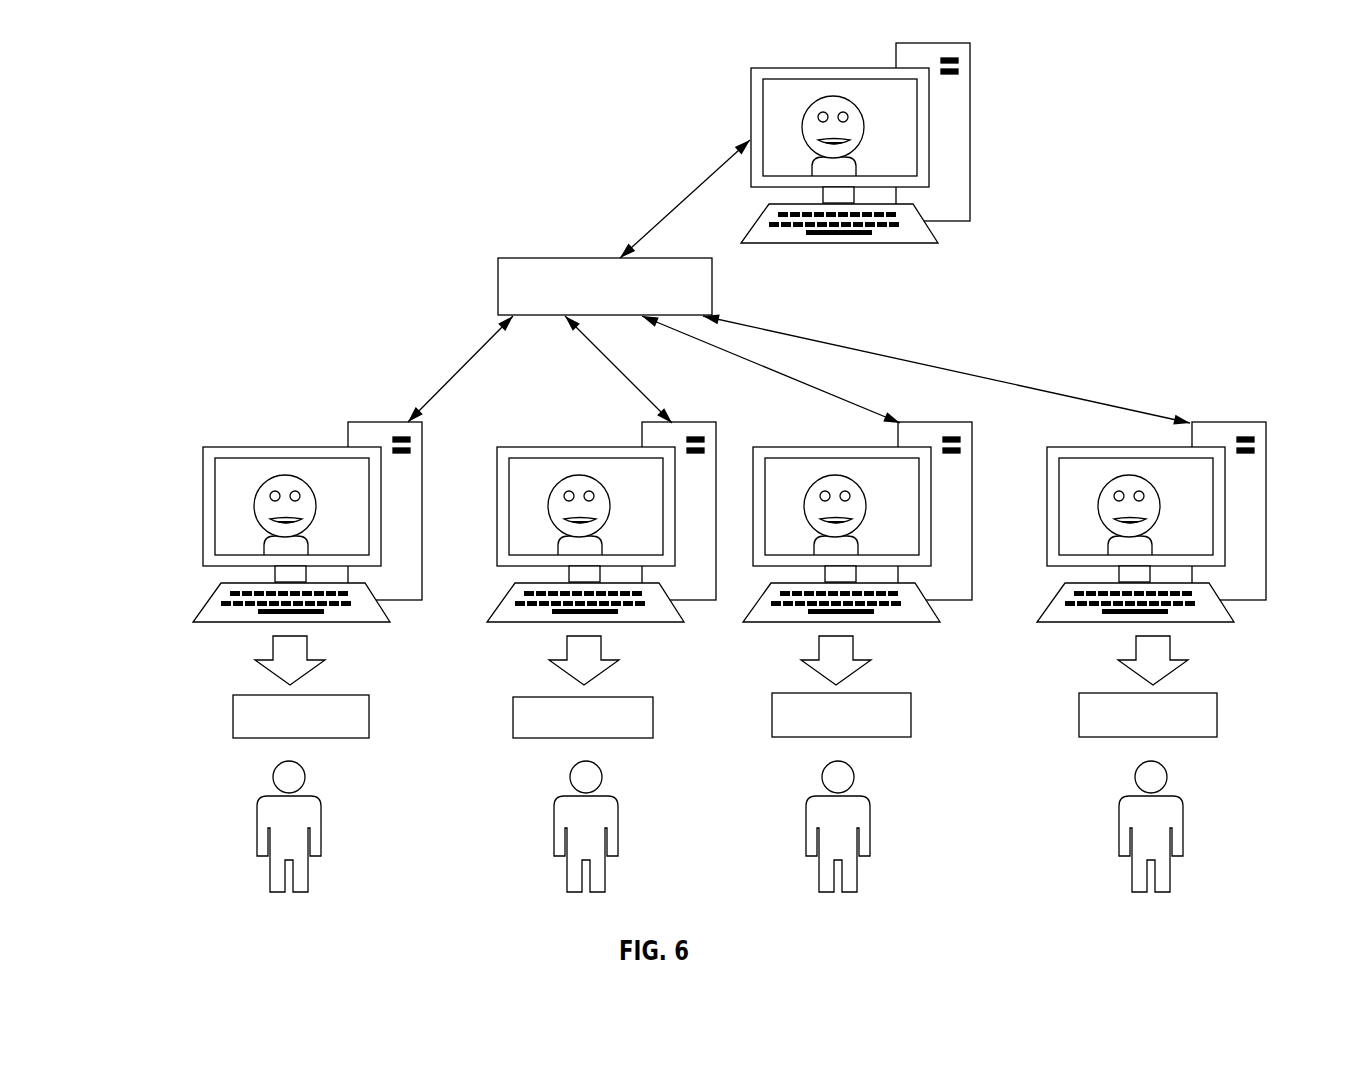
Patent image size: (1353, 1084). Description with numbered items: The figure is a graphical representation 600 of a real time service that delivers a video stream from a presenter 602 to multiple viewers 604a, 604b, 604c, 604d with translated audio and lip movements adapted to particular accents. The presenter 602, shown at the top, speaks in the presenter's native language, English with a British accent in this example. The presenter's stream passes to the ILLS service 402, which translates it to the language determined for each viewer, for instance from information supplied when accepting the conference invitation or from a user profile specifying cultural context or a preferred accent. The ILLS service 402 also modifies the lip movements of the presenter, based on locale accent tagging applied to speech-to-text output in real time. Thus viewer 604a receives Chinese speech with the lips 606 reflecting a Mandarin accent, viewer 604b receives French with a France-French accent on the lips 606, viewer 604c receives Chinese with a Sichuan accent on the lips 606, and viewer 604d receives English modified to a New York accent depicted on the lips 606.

The graphical representation 600 is at (373, 82).
The ILLS service 402 is at (620, 306).
The presenter 602 is at (807, 109).
The lips 606 is at (268, 524).
The viewer 604a is at (321, 832).
The viewer 604b is at (618, 832).
The viewer 604c is at (870, 832).
The viewer 604d is at (1183, 831).